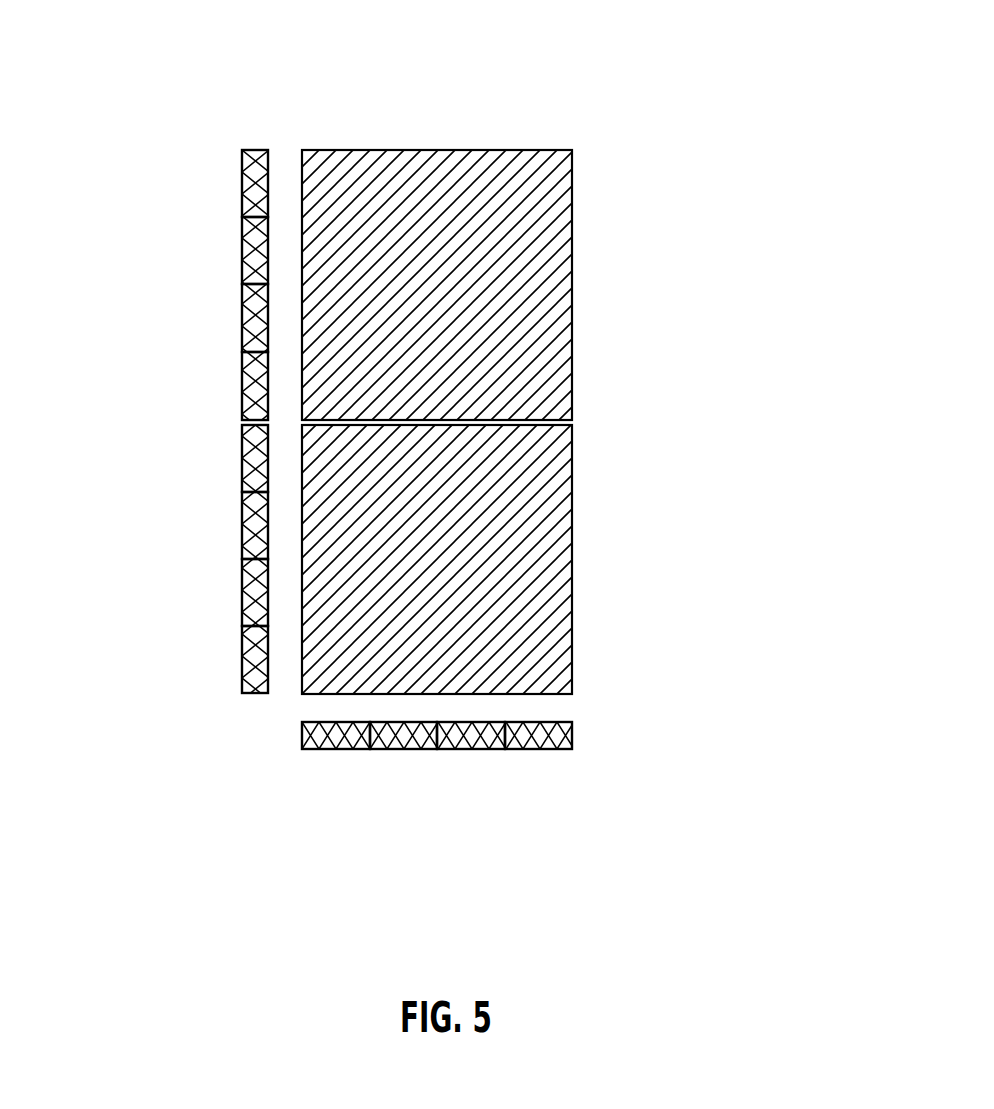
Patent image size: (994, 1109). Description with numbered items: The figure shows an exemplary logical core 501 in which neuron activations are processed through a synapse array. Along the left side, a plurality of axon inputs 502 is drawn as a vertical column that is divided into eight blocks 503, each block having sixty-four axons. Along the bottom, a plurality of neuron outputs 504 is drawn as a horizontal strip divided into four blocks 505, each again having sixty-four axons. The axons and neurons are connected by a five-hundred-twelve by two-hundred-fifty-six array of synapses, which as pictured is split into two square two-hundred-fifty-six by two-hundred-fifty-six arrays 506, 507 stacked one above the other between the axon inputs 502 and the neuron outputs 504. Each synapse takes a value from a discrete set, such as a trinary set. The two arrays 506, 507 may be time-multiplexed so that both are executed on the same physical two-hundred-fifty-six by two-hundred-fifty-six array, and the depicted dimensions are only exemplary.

The core 501 is at (461, 42).
The axon inputs 502 is at (303, 128).
The blocks 503 is at (222, 195).
The neuron outputs 504 is at (587, 690).
The blocks 505 is at (347, 768).
The array of synapses 506 is at (527, 247).
The array of synapses 507 is at (527, 521).